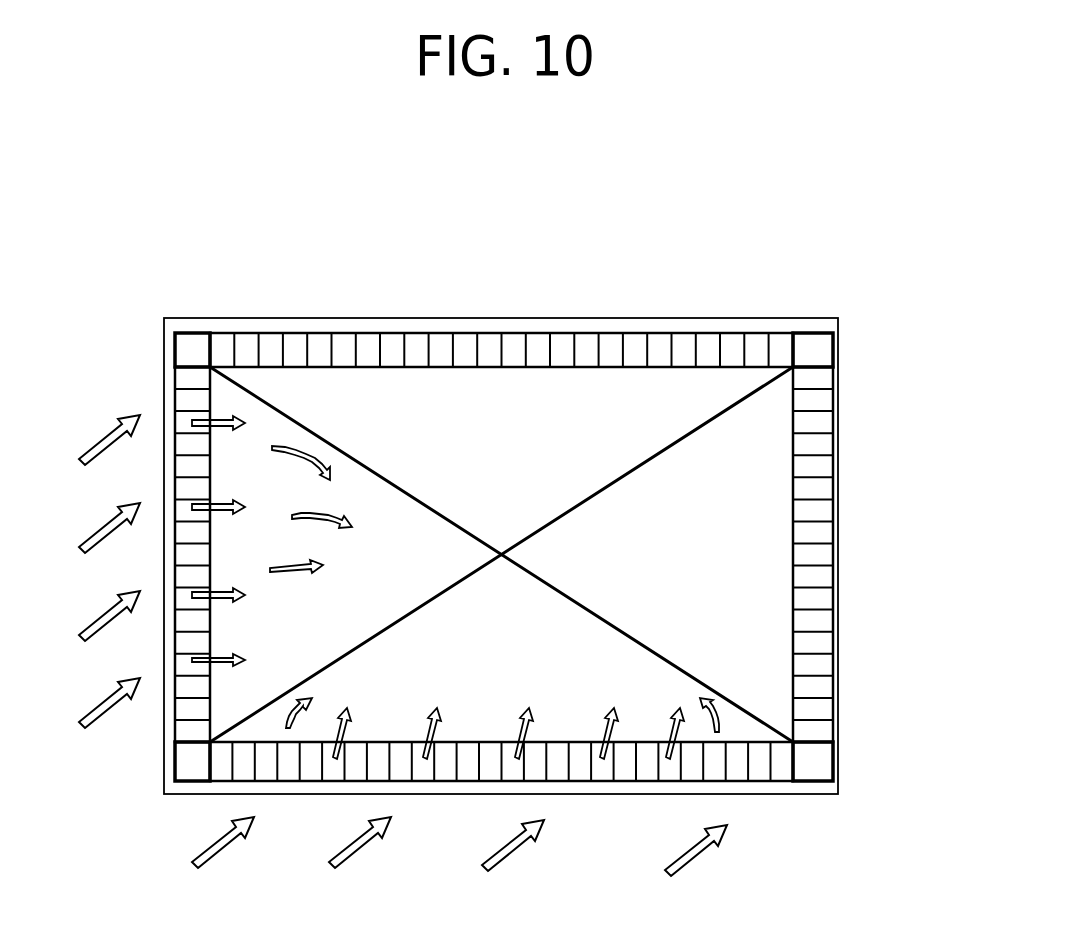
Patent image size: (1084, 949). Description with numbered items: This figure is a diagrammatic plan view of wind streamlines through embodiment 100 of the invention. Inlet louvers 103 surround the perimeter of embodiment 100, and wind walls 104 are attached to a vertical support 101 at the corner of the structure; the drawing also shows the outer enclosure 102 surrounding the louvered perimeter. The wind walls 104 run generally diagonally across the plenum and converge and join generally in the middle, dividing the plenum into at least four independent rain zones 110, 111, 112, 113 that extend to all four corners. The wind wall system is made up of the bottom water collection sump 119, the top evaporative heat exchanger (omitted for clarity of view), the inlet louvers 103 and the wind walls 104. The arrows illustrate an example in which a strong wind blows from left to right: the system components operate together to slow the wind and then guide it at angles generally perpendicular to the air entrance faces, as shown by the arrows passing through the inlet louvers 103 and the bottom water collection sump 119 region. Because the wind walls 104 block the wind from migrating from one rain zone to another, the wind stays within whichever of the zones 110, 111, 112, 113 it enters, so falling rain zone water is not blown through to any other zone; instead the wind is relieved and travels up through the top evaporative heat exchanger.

The embodiment 100 is at (423, 303).
The vertical support 101 is at (833, 347).
The housing 102 is at (839, 718).
The inlet louvers 103 is at (833, 537).
The wind walls 104 is at (715, 417).
The rain zone 110 is at (238, 403).
The rain zone 111 is at (470, 725).
The rain zone 112 is at (535, 423).
The rain zone 113 is at (765, 570).
The bottom water collection sump 119 is at (655, 730).